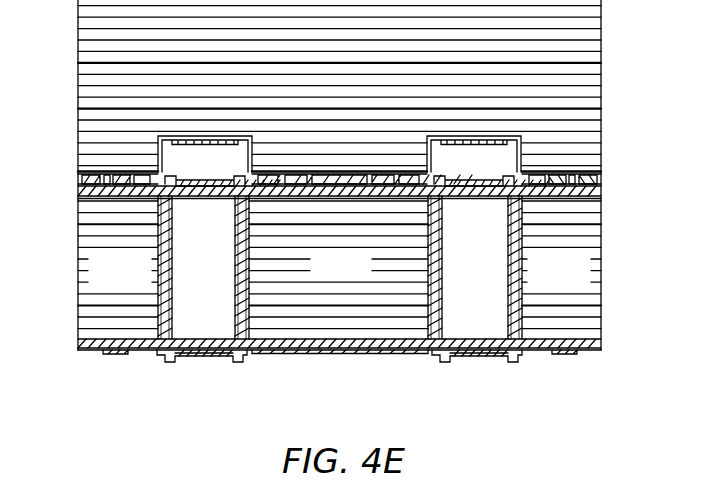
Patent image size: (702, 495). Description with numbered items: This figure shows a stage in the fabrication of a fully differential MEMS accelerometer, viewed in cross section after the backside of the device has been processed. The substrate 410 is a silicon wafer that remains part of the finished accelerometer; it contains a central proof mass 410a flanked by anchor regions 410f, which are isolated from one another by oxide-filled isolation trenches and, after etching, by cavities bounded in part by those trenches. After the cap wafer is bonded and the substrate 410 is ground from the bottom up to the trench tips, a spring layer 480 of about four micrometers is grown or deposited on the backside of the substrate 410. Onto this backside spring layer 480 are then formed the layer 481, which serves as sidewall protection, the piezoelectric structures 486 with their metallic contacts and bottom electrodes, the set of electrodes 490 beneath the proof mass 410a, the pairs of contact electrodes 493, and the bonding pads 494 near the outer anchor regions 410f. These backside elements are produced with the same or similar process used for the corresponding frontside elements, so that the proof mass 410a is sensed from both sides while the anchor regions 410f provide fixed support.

The substrate 410 is at (68, 187).
The anchor regions 410f is at (140, 280).
The proof mass 410a is at (362, 280).
The layer 480 is at (601, 343).
The layer 481 is at (601, 347).
The bonding pads 494 is at (114, 355).
The pairs of electrodes 493 is at (170, 362).
The piezoelectric structures 486 is at (203, 356).
The set of electrodes 490 is at (308, 352).